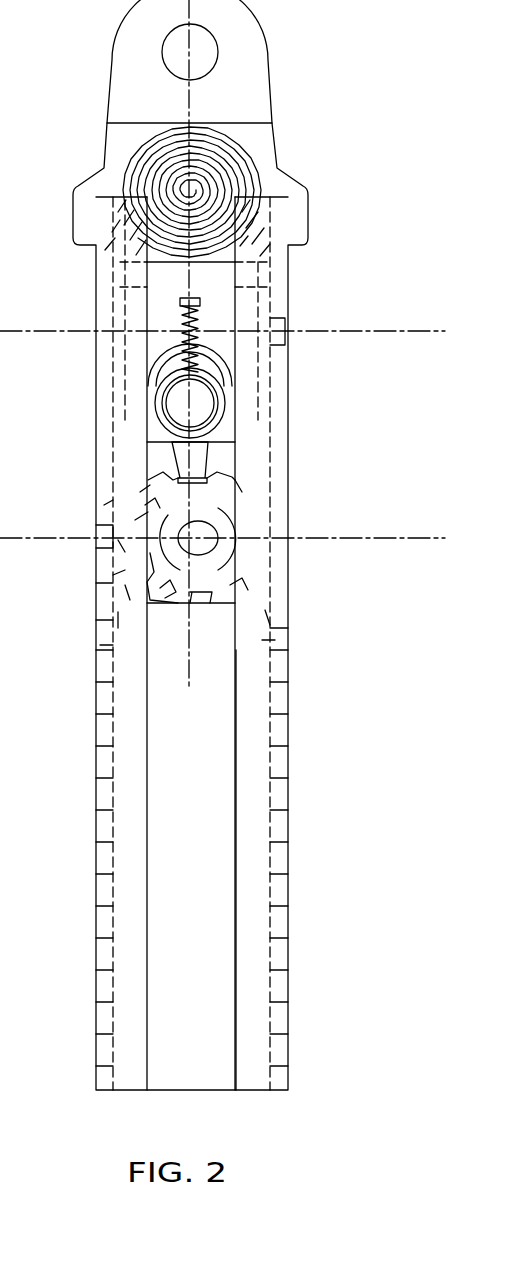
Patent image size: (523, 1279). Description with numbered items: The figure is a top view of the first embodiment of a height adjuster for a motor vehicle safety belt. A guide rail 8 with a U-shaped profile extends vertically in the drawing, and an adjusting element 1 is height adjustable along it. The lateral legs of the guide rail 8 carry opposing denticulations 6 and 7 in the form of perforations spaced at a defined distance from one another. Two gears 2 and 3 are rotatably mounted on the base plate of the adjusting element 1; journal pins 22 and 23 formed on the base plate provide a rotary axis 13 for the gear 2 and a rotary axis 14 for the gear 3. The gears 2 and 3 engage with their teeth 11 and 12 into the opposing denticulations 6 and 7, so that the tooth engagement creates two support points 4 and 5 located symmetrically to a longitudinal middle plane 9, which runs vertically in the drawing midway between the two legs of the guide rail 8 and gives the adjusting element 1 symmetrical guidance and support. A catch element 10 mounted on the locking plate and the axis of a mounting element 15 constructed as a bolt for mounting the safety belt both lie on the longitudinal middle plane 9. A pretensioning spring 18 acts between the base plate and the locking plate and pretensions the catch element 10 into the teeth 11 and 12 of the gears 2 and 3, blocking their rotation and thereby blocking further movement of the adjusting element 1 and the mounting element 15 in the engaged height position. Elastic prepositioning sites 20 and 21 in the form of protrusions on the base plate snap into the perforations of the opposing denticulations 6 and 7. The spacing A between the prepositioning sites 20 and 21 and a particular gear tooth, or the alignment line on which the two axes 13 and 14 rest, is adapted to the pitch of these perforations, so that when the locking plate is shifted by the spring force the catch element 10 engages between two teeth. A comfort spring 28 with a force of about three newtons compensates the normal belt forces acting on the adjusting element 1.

The adjusting element 1 is at (246, 471).
The gear 2 is at (278, 595).
The gear 3 is at (110, 588).
The support point 4 is at (287, 537).
The support point 5 is at (95, 537).
The opposing denticulation 6 is at (283, 732).
The opposing denticulation 7 is at (100, 731).
The guide rail 8 is at (257, 835).
The longitudinal middle plane 9 is at (190, 107).
The catch element 10 is at (182, 463).
The teeth 11 is at (288, 627).
The teeth 12 is at (113, 620).
The rotary axis 13 is at (195, 537).
The rotary axis 14 is at (195, 537).
The mounting element 15 is at (197, 405).
The pretensioning spring 18 is at (220, 300).
The prepositioning site 20 is at (291, 336).
The prepositioning site 21 is at (108, 336).
The journal pin 22 is at (205, 532).
The journal pin 23 is at (110, 503).
The comfort spring 28 is at (233, 167).
The spacing A is at (433, 331).